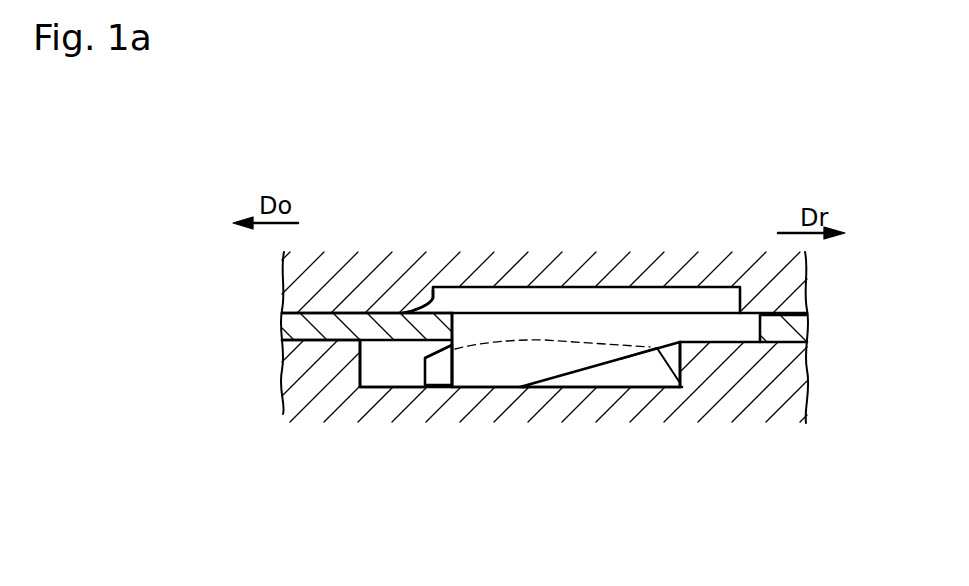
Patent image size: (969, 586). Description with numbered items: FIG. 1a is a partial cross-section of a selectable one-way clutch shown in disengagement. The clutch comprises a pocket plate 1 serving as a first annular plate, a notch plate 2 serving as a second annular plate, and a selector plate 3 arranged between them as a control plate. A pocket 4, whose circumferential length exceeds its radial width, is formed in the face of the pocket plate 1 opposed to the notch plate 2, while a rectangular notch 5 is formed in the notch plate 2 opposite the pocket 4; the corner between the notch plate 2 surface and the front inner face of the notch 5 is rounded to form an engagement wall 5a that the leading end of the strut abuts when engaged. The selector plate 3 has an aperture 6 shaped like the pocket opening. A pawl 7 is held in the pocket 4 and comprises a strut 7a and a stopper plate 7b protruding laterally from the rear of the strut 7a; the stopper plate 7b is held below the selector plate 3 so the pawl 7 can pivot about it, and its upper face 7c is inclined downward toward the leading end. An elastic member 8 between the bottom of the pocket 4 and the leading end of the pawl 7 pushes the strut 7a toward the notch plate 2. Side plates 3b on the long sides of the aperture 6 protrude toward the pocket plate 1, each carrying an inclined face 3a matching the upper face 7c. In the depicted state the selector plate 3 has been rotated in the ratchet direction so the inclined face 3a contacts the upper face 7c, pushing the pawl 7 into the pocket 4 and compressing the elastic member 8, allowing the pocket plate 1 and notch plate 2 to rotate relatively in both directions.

The pocket plate 1 is at (310, 395).
The notch plate 2 is at (343, 290).
The selector plate 3 is at (787, 330).
The inclined face 3a is at (572, 372).
The side plate 3b is at (444, 370).
The pocket 4 is at (380, 388).
The notch 5 is at (677, 287).
The engagement wall 5a is at (440, 298).
The aperture 6 is at (743, 330).
The pawl 7 is at (422, 350).
The strut 7a is at (540, 340).
The stopper plate 7b is at (650, 373).
The upper face 7c is at (635, 347).
The elastic member 8 is at (478, 384).